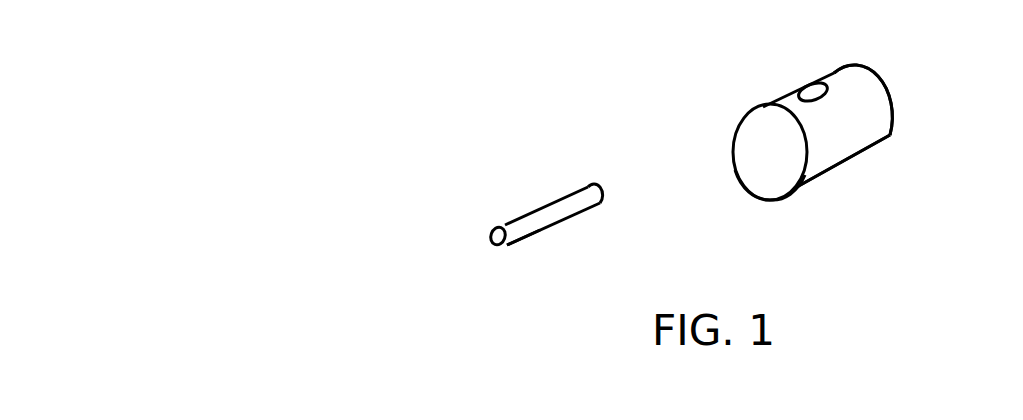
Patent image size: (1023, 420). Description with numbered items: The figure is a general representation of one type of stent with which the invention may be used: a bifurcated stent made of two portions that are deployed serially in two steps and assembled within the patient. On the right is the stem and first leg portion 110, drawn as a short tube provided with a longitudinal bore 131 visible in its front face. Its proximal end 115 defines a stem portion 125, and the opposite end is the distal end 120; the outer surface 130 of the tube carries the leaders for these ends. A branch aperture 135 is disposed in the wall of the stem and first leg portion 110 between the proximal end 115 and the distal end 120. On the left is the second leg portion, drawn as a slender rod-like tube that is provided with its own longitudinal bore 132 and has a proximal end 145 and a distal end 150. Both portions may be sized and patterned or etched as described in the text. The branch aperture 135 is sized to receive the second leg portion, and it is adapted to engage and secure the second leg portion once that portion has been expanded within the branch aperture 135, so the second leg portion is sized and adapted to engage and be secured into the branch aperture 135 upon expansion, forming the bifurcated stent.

The stem and first leg portion 110 is at (800, 89).
The proximal end 115 is at (762, 199).
The distal end 120 is at (887, 138).
The stem portion 125 is at (790, 196).
The outer surface of sleeve 130 is at (860, 161).
The longitudinal bore 131 is at (797, 167).
The longitudinal bore 132 is at (492, 237).
The branch aperture 135 is at (815, 84).
The proximal end 145 is at (498, 245).
The distal end 150 is at (600, 193).